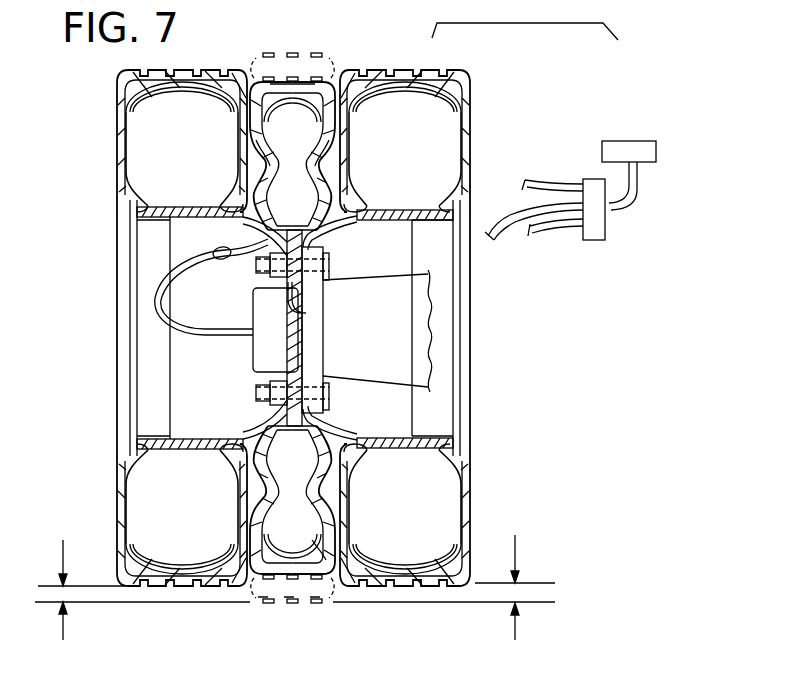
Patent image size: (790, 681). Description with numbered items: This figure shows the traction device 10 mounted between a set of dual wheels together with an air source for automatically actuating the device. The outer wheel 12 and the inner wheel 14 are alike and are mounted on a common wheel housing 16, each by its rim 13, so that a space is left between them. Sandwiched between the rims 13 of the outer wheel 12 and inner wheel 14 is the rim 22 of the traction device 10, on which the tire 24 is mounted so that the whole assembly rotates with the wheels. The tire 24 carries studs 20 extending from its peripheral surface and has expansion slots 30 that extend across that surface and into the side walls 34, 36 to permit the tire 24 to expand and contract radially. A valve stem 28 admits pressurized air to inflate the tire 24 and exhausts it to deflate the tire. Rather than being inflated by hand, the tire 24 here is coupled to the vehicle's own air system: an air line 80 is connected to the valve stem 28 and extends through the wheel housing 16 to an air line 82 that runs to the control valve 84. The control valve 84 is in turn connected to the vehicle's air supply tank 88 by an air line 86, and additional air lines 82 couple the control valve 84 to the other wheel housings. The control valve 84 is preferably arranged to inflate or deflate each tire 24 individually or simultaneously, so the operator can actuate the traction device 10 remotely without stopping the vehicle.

The traction device 10 is at (296, 608).
The outer wheel 12 is at (183, 66).
The rim 13 is at (302, 313).
The inner wheel 14 is at (400, 70).
The wheel housing 16 is at (266, 318).
The studs 20 is at (316, 82).
The rim 22 is at (291, 373).
The tire 24 is at (328, 562).
The valve stem 28 is at (214, 230).
The expansion slots 30 is at (282, 86).
The side wall 34 is at (328, 166).
The side wall 36 is at (259, 155).
The air line 80 is at (203, 331).
The air line 82 is at (545, 183).
The control valve 84 is at (592, 242).
The air line 86 is at (624, 208).
The air supply tank 88 is at (645, 140).